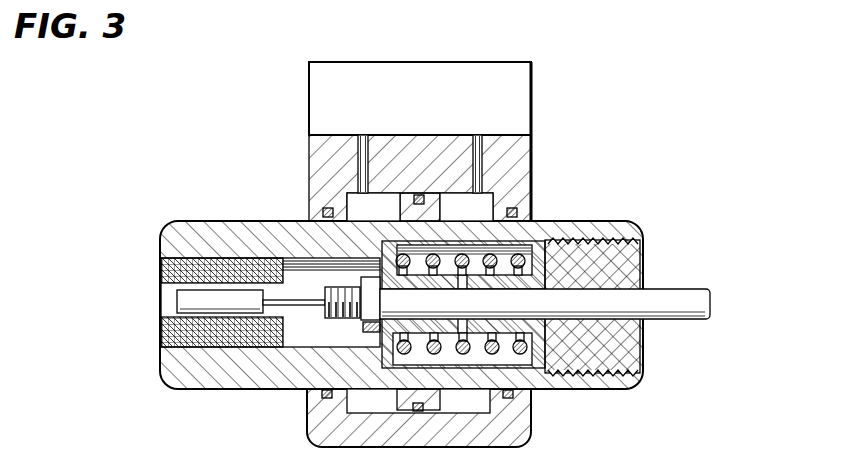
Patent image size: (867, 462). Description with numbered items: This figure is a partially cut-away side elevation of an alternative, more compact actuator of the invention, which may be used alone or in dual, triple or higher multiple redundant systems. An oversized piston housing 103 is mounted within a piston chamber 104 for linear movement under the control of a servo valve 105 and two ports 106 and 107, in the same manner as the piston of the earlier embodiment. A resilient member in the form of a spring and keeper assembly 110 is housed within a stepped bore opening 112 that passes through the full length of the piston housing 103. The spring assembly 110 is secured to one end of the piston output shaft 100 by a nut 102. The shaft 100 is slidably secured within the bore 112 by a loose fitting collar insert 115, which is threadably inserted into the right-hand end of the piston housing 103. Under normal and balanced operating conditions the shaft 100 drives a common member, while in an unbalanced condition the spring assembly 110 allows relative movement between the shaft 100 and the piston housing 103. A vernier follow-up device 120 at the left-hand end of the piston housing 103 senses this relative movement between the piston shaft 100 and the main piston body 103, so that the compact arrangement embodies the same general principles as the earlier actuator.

The piston output shaft 100 is at (672, 312).
The nut 102 is at (368, 337).
The oversized piston housing 103 is at (395, 203).
The piston chamber 104 is at (470, 208).
The servo valve 105 is at (533, 90).
The port 106 is at (358, 147).
The port 107 is at (482, 177).
The spring and keeper assembly 110 is at (503, 352).
The stepped bore opening 112 is at (363, 343).
The loose fitting collar insert 115 is at (622, 357).
The vernier follow-up device 120 is at (160, 265).